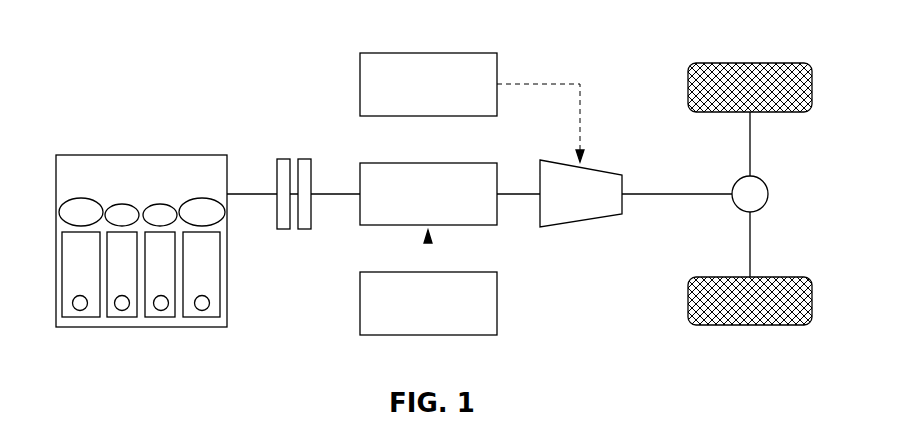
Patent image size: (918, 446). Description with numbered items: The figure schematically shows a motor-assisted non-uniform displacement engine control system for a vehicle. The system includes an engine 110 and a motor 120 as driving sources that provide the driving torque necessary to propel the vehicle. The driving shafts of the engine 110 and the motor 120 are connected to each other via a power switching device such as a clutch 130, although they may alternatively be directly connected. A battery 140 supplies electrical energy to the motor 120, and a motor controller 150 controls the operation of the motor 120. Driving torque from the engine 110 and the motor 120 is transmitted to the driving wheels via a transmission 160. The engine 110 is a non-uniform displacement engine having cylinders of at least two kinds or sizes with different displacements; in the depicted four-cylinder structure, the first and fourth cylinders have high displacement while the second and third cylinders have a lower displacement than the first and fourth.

The engine 110 is at (137, 155).
The motor 120 is at (360, 162).
The clutch 130 is at (305, 155).
The battery 140 is at (360, 312).
The motor controller 150 is at (360, 70).
The transmission 160 is at (598, 170).